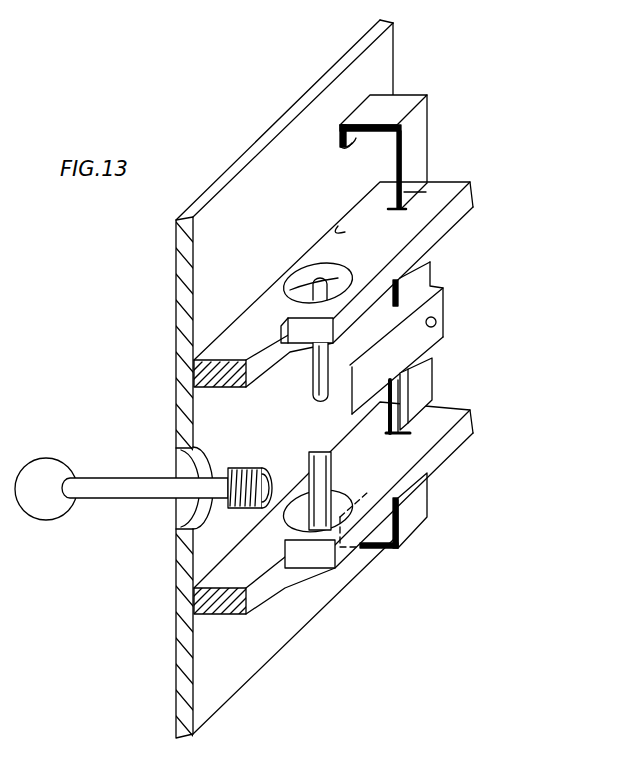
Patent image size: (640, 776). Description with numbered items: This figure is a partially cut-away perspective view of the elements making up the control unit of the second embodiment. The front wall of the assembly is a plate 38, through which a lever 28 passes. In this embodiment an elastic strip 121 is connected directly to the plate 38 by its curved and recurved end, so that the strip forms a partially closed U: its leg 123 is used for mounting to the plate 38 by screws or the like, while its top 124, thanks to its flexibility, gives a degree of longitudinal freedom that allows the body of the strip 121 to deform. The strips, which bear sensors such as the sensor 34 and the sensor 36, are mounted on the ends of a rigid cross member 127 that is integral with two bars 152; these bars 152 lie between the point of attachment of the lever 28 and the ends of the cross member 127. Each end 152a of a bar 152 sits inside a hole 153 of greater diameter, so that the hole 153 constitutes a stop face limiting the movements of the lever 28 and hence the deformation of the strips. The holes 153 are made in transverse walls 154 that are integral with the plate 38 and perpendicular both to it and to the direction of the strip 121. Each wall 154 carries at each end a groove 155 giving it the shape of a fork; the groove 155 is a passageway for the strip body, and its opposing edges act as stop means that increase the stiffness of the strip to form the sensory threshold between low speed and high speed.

The plate 38 is at (192, 289).
The top 124 is at (398, 106).
The leg 123 is at (352, 142).
The elastic strip 121 is at (422, 162).
The groove 155 is at (413, 190).
The transverse wall 154 is at (472, 188).
The hole 153 is at (338, 230).
The end 152a is at (318, 284).
The bar 152 is at (304, 378).
The sensor 34 is at (432, 262).
The sensor 36 is at (422, 372).
The cross member 127 is at (394, 406).
The lever 28 is at (130, 492).